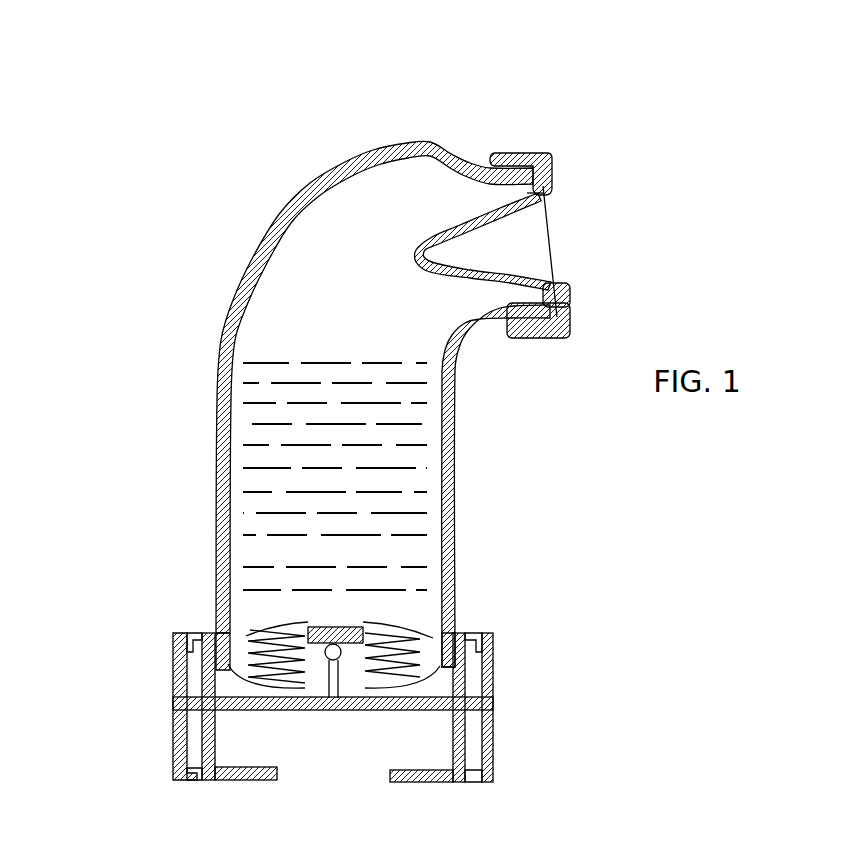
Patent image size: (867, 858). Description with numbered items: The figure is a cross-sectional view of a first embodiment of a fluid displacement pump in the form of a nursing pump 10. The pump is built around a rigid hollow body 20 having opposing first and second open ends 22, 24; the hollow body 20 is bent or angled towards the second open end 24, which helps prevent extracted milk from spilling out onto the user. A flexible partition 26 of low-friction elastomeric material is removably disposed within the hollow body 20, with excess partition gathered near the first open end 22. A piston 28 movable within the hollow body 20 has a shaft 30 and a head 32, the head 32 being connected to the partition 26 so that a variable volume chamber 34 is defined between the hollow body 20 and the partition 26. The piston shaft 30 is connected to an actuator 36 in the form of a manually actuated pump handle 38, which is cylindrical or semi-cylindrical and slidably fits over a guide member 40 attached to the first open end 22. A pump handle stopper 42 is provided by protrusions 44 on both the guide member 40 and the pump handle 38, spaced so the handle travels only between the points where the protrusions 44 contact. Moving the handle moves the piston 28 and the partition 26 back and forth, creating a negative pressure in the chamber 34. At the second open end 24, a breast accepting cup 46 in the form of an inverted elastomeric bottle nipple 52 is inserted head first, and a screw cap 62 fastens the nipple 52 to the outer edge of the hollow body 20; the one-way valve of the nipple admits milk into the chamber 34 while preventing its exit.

The nursing pump 10 is at (319, 124).
The rigid hollow body 20 is at (217, 436).
The first open end 22 is at (240, 623).
The second open end 24 is at (528, 193).
The flexible partition 26 is at (410, 636).
The piston 28 is at (355, 628).
The piston shaft 30 is at (472, 633).
The piston head 32 is at (336, 625).
The variable volume chamber 34 is at (288, 340).
The actuator 36 is at (220, 697).
The pump handle 38 is at (173, 730).
The guide member 40 is at (202, 750).
The pump handle stopper 42 is at (449, 782).
The protrusions 44 is at (472, 763).
The breast accepting cup 46 is at (562, 248).
The inverted elastomeric bottle nipple 52 is at (470, 221).
The screw cap 62 is at (537, 167).